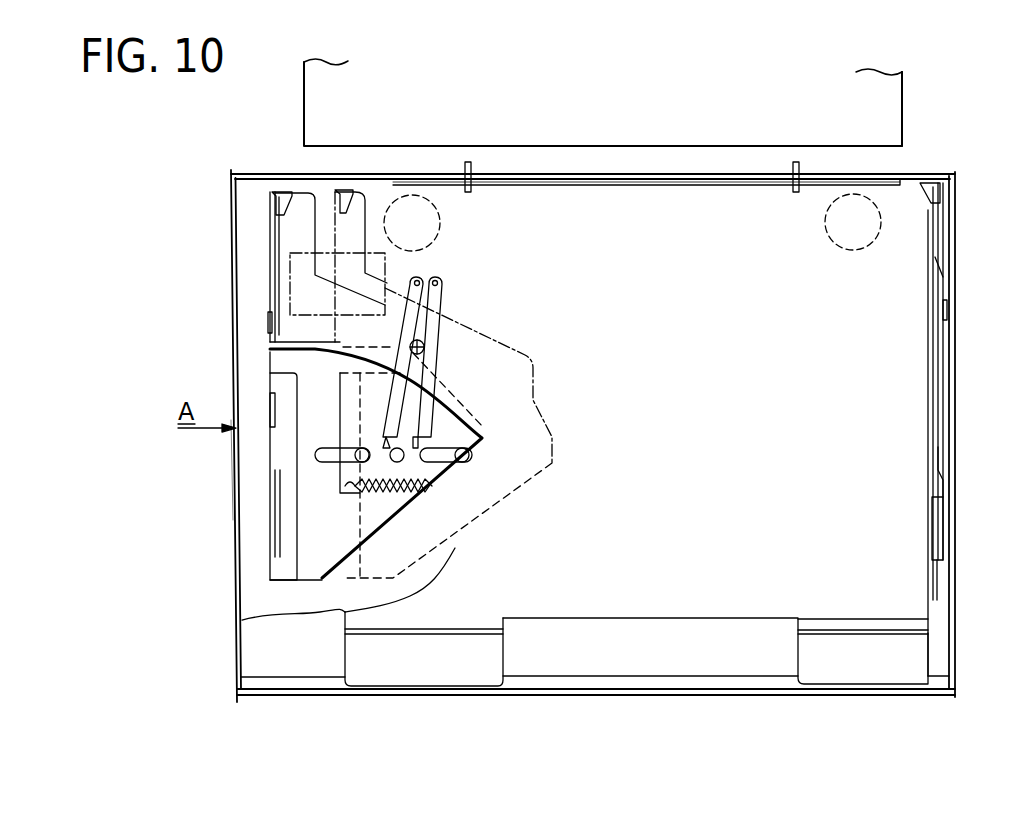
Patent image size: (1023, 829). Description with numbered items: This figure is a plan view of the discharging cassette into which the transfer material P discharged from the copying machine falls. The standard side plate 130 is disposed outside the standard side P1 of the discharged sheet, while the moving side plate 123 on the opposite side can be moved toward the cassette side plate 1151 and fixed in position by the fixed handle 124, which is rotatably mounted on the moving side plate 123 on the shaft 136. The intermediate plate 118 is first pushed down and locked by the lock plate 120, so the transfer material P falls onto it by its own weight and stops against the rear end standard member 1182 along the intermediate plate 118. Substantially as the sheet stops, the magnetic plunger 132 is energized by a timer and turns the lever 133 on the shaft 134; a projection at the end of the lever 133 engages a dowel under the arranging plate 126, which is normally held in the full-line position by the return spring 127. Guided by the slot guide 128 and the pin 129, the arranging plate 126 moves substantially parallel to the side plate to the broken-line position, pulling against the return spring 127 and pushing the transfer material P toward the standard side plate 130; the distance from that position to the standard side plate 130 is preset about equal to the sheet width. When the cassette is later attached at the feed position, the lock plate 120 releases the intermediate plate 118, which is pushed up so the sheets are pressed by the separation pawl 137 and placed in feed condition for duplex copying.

The transfer material P is at (619, 128).
The standard side of the transfer material P1 is at (902, 98).
The intermediate plate 118 is at (815, 482).
The rear end standard member 1182 is at (862, 620).
The lock plate 120 is at (471, 165).
The moving side plate 123 is at (275, 241).
The fixed handle 124 is at (270, 440).
The arranging plate 126 is at (283, 572).
The return spring 127 is at (405, 493).
The slot guide 128 is at (322, 449).
The pin 129 is at (360, 462).
The standard side plate 130 is at (940, 358).
The magnetic plunger 132 is at (385, 260).
The lever 133 is at (425, 321).
The shaft 134 is at (426, 346).
The shaft 136 is at (270, 410).
The separation pawl 137 is at (282, 192).
The cassette side plate 1151 is at (232, 505).